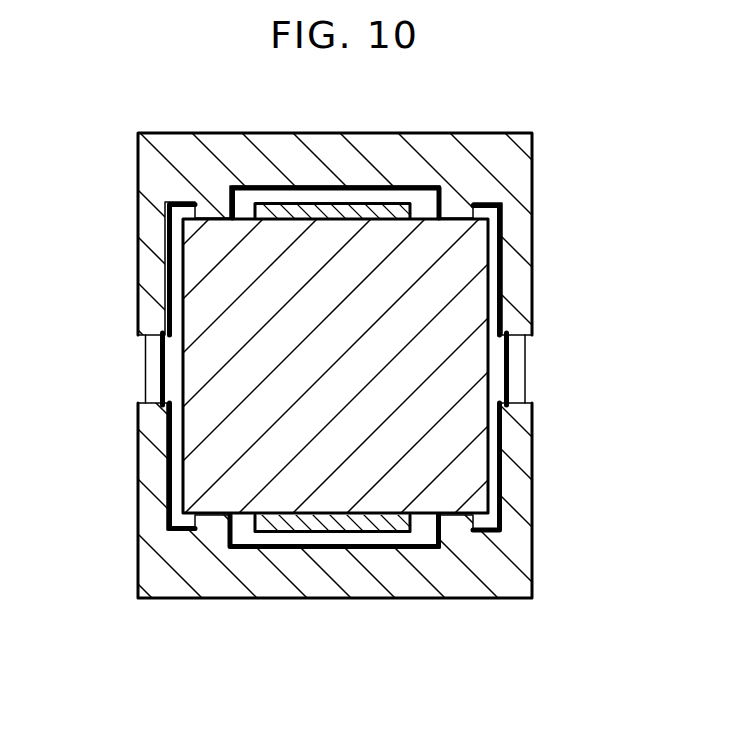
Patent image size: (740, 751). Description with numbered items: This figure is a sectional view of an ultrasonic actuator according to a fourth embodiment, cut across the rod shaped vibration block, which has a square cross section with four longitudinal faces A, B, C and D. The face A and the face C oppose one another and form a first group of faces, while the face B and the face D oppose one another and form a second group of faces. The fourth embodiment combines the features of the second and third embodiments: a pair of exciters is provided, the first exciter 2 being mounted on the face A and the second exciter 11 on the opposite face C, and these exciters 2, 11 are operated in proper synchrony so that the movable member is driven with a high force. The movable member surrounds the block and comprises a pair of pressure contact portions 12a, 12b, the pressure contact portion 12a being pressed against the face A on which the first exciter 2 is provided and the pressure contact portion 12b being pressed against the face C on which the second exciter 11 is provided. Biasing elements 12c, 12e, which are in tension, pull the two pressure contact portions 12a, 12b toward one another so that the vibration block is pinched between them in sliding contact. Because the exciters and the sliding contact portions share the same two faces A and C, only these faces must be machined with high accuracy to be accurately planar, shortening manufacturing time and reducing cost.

The first exciter 2 is at (316, 208).
The second exciter 11 is at (297, 520).
The pressure contact portion 12a is at (510, 153).
The pressure contact portion 12b is at (513, 572).
The biasing element 12c is at (512, 362).
The biasing element 12e is at (155, 380).
The face A is at (430, 215).
The face B is at (497, 387).
The face C is at (423, 517).
The face D is at (187, 355).